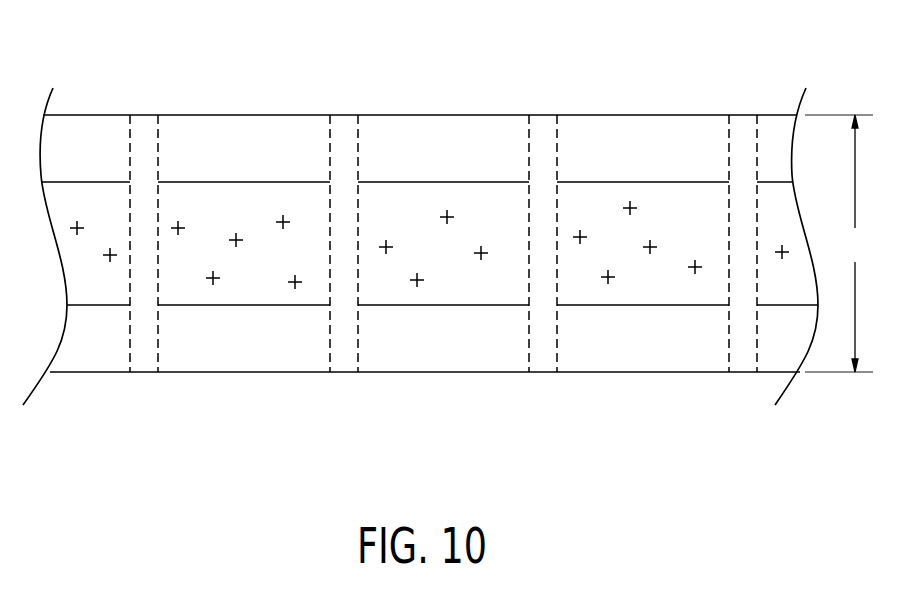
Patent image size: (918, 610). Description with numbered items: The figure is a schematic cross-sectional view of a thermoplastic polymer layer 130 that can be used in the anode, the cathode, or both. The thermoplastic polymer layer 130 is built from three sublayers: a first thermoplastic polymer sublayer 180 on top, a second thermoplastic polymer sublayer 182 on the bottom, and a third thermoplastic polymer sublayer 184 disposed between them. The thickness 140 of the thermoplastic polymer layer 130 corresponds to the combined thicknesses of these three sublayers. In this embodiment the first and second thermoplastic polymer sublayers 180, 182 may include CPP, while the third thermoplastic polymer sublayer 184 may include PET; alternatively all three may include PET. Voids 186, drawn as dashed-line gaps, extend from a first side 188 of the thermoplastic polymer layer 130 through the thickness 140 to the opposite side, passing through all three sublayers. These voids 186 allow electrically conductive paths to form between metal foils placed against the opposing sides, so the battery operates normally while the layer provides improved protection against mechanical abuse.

The thermoplastic polymer layer 130 is at (648, 70).
The thickness 140 is at (93, 373).
The first thermoplastic polymer sublayer 180 is at (240, 138).
The second thermoplastic polymer sublayer 182 is at (253, 365).
The third thermoplastic polymer sublayer 184 is at (257, 197).
The voids 186 is at (130, 147).
The first side 188 is at (78, 115).